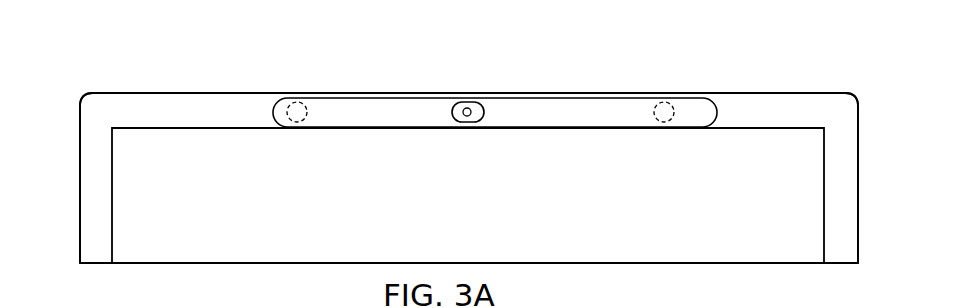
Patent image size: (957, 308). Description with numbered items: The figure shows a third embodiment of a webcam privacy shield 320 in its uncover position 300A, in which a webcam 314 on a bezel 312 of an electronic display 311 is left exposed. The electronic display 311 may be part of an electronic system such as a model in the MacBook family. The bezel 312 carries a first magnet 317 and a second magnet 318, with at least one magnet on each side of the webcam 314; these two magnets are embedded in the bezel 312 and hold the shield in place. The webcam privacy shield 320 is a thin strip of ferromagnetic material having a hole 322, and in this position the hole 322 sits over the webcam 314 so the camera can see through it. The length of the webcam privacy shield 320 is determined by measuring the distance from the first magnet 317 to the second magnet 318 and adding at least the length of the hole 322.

The uncover position 300A is at (808, 86).
The electronic display 311 is at (180, 234).
The bezel 312 is at (80, 105).
The webcam 314 is at (470, 103).
The first magnet 317 is at (291, 97).
The second magnet 318 is at (662, 97).
The webcam privacy shield 320 is at (345, 108).
The hole 322 is at (455, 109).